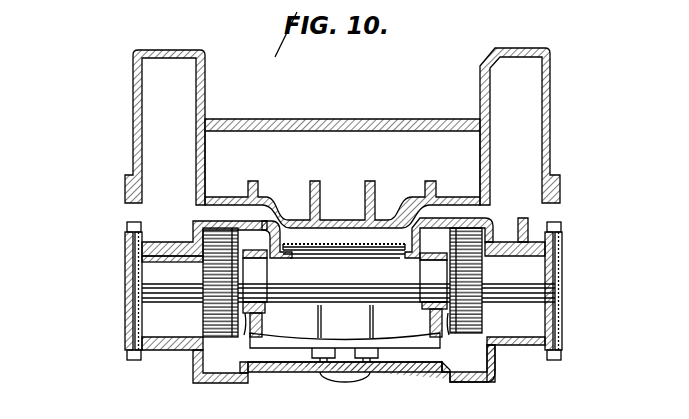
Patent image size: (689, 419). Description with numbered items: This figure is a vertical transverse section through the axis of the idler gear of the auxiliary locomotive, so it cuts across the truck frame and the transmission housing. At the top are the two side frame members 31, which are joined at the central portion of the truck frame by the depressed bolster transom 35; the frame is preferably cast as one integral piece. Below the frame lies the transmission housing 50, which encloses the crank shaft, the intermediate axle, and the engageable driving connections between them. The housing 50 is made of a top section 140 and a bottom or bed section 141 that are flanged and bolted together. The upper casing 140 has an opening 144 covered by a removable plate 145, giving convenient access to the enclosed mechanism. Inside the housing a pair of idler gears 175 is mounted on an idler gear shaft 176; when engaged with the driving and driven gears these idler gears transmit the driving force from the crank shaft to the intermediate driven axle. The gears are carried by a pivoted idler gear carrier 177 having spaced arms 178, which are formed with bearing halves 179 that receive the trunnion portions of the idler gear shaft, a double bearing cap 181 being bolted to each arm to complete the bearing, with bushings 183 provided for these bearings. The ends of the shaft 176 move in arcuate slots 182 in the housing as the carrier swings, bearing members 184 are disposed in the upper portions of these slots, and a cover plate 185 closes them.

The side frame members 31 is at (140, 103).
The bolster transom 35 is at (368, 140).
The top section 140 is at (197, 221).
The bottom section 141 is at (272, 366).
The transmission housing 50 is at (238, 364).
The removable plate 145 is at (330, 244).
The opening 144 is at (305, 252).
The idler gears 175 is at (215, 238).
The idler gear shaft 176 is at (150, 293).
The idler gear carrier 177 is at (402, 349).
The carrier arms 178 is at (262, 323).
The bearing halves 179 is at (247, 320).
The double bearing cap 181 is at (262, 250).
The arcuate slots 182 is at (172, 330).
The bushings 183 is at (262, 258).
The bearing members 184 is at (150, 262).
The cover plate 185 is at (138, 285).